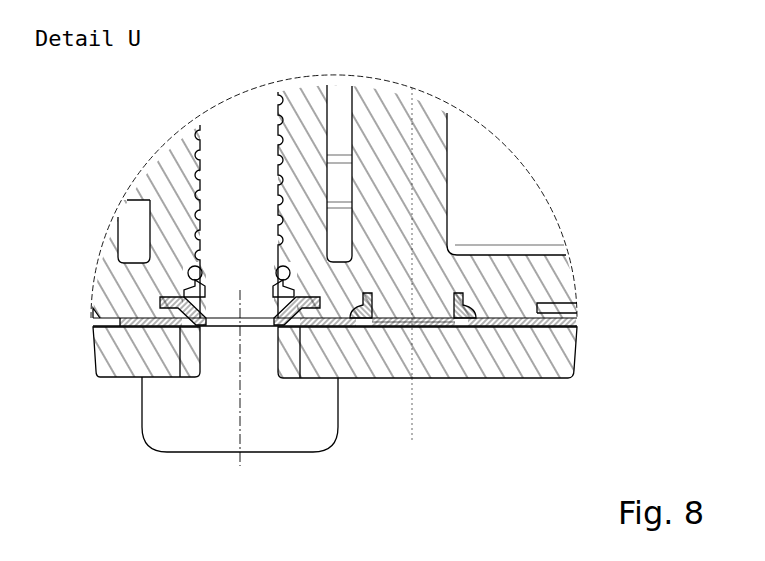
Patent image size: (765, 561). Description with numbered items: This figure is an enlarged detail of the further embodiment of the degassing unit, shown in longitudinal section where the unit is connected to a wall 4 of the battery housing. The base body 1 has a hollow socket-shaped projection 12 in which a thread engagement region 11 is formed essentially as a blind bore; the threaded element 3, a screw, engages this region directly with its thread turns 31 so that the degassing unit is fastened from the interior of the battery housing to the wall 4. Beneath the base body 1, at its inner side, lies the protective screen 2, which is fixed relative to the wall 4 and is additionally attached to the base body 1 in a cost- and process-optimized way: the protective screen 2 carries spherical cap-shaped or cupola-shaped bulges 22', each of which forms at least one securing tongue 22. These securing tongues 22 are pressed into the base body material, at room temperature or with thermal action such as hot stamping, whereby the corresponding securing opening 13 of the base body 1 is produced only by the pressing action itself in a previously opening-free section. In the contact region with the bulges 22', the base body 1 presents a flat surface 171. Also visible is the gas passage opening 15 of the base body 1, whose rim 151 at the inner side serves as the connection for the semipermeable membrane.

The base body 1 is at (93, 270).
The protective screen 2 is at (137, 330).
The threaded element 3 is at (256, 112).
The wall 4 is at (382, 382).
The thread engagement region 11 is at (280, 215).
The hollow socket-shaped projection 12 is at (178, 150).
The securing opening 13 is at (463, 299).
The gas passage opening 15 is at (93, 318).
The rim 151 is at (125, 324).
The flat surface 171 is at (423, 319).
The securing tongue 22 is at (475, 364).
The bulge 22' is at (358, 395).
The thread turns 31 is at (280, 178).